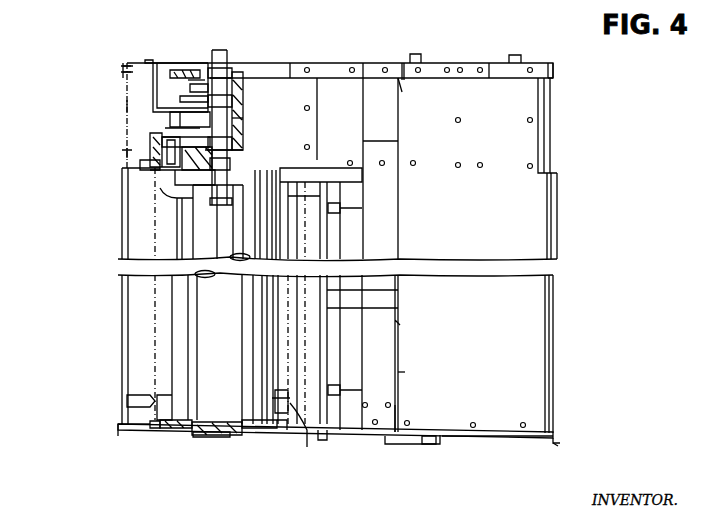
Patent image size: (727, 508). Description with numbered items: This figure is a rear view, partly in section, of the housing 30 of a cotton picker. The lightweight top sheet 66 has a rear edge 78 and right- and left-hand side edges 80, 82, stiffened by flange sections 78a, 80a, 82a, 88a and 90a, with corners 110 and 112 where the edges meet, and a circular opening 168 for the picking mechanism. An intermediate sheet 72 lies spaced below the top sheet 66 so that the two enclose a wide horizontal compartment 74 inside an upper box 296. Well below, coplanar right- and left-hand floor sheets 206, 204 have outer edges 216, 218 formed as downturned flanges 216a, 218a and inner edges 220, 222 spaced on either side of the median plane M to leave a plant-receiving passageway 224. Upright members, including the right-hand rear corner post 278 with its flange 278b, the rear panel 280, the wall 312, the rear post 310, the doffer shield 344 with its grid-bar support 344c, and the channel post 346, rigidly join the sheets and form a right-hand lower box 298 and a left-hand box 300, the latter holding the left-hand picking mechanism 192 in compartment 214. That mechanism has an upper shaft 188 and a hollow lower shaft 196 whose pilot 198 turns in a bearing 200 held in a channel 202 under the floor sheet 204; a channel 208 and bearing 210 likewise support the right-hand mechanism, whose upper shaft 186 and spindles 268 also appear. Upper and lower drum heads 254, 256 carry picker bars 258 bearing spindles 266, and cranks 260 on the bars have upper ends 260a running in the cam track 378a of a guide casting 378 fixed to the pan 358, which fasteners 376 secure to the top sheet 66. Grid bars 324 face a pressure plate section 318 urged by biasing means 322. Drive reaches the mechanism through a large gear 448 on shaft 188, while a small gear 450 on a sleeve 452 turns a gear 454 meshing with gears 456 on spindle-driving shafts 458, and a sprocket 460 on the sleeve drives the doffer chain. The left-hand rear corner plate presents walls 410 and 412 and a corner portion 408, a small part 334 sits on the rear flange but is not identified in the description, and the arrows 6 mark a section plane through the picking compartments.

The housing 30 is at (562, 136).
The top sheet 66 is at (138, 62).
The intermediate sheet 72 is at (142, 167).
The horizontal compartment 74 is at (141, 87).
The transverse rear edge 78 is at (334, 64).
The rear edge flange 78a is at (364, 63).
The right-hand outer side edge 80 is at (556, 66).
The right-hand side edge flange 80a is at (555, 78).
The left-hand outer side edge 82 is at (124, 66).
The left-hand side edge flange 82a is at (123, 72).
The notch edge flange 88a is at (490, 63).
The secondary edge flange 90a is at (401, 80).
The corner 110 is at (550, 64).
The corner 112 is at (403, 63).
The circular opening 168 is at (175, 62).
The upper shaft 186 is at (422, 57).
The upper shaft 188 is at (222, 50).
The left-hand picking mechanism 192 is at (141, 242).
The hollow upright lower shaft 196 is at (198, 402).
The pilot 198 is at (216, 437).
The bearing 200 is at (230, 438).
The fore-and-aft channel 202 is at (252, 430).
The left-hand floor sheet 204 is at (135, 432).
The right-hand floor sheet 206 is at (516, 438).
The channel 208 is at (392, 440).
The bearing 210 is at (426, 444).
The left-hand picking mechanism compartment 214 is at (135, 371).
The outer marginal side edge 216 is at (557, 436).
The downturned flange 216a is at (560, 445).
The outer side edge 218 is at (120, 428).
The downturned flange 218a is at (375, 375).
The inner edge 220 is at (324, 440).
The inner edge 222 is at (283, 432).
The plant-receiving passageway 224 is at (284, 337).
The upper drum head 254 is at (200, 186).
The lower drum head 256 is at (160, 430).
The picker bars 258 is at (177, 200).
The crank 260 is at (162, 140).
The crank upper end 260a is at (165, 130).
The picker spindles 266 is at (180, 178).
The picker spindles 268 is at (318, 196).
The right-hand rear corner post 278 is at (390, 331).
The upright marginal flange 278b is at (398, 398).
The upright wall or panel 280 is at (538, 233).
The upper box 296 is at (324, 107).
The right-hand lower box 298 is at (538, 377).
The left-hand box 300 is at (112, 319).
The rear post 310 is at (332, 352).
The upright wall 312 is at (340, 308).
The pressure plate section 318 is at (340, 290).
The biasing means 322 is at (346, 210).
The left-hand grid bars 324 is at (303, 432).
The stud 334 is at (517, 55).
The doffer shield 344 is at (247, 346).
The grid bar support 344c is at (262, 308).
The channel-shaped post 346 is at (270, 361).
The supporting pan 358 is at (188, 82).
The fasteners 376 is at (149, 60).
The guide casting 378 is at (172, 119).
The cam track 378a is at (243, 122).
The corner portion 408 is at (292, 76).
The left-hand wall 410 is at (127, 105).
The rear wall 412 is at (353, 141).
The large gear 448 is at (200, 70).
The small gear 450 is at (190, 88).
The sleeve 452 is at (247, 120).
The gear 454 is at (232, 151).
The gears 456 is at (124, 153).
The spindle-driving shafts 458 is at (182, 170).
The sprocket 460 is at (180, 99).
The section line 6 is at (108, 177).
The median plane M is at (320, 56).